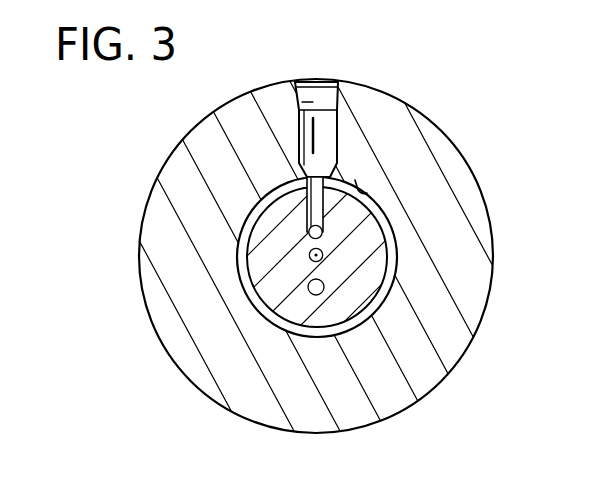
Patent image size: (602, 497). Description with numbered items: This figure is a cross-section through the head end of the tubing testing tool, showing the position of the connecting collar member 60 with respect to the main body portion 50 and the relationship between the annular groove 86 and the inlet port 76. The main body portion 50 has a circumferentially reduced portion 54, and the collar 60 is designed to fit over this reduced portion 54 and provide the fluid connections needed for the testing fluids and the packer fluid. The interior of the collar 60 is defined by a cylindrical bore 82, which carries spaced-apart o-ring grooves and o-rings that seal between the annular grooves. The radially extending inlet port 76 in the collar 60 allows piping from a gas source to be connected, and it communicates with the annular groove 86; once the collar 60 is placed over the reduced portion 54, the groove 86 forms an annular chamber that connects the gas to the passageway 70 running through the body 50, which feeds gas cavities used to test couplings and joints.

The main body portion 50 is at (363, 279).
The circumferentially reduced portion 54 is at (259, 302).
The connecting collar member 60 is at (463, 187).
The passageway 70 is at (310, 231).
The inlet port 76 is at (325, 83).
The cylindrical bore 82 is at (355, 180).
The annular groove 86 is at (393, 243).